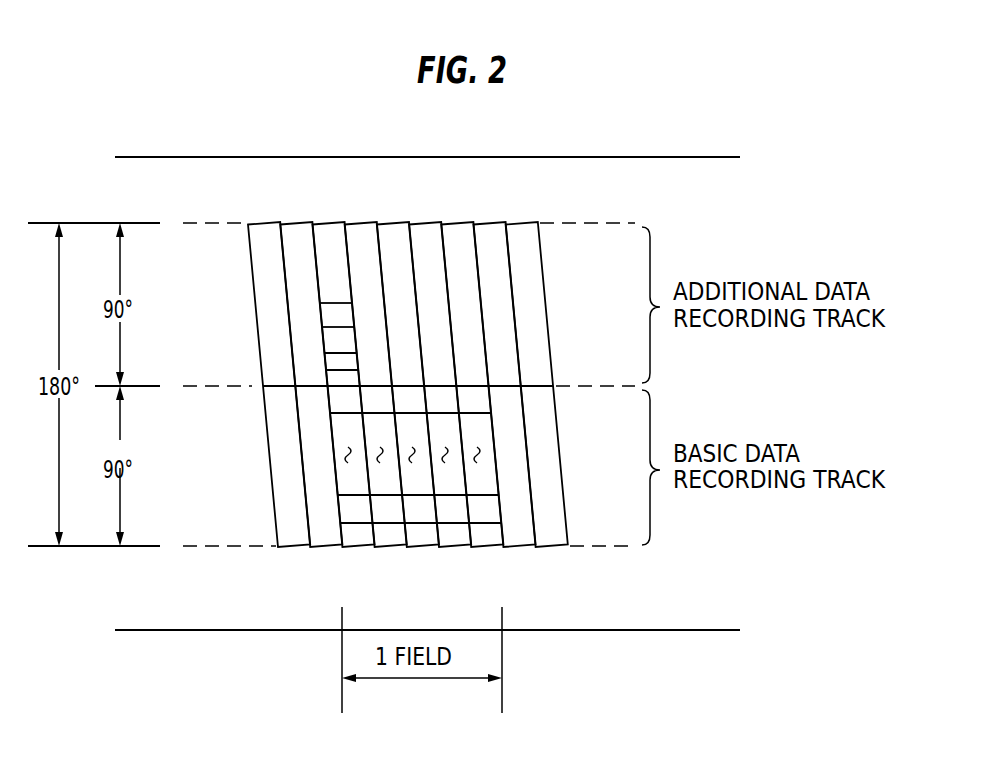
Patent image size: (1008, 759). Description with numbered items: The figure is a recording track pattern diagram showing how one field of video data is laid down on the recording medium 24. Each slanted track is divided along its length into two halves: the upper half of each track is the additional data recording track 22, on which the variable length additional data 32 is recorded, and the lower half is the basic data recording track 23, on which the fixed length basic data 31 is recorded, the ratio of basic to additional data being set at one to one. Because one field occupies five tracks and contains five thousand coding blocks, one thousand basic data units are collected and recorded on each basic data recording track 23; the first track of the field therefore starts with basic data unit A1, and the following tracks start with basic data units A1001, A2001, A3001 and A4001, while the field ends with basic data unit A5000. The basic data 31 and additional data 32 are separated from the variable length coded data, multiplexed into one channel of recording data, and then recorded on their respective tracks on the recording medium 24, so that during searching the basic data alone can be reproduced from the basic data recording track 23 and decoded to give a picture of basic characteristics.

The additional data recording track 22 is at (330, 233).
The basic data recording track 23 is at (345, 473).
The recording medium 24 is at (427, 393).
The basic data 31 is at (332, 378).
The additional data 32 is at (333, 357).
The basic data unit A1 is at (356, 535).
The basic data unit A1001 is at (383, 543).
The basic data unit A2001 is at (421, 535).
The basic data unit A3001 is at (457, 543).
The basic data unit A4001 is at (491, 535).
The basic data unit A5000 is at (476, 395).